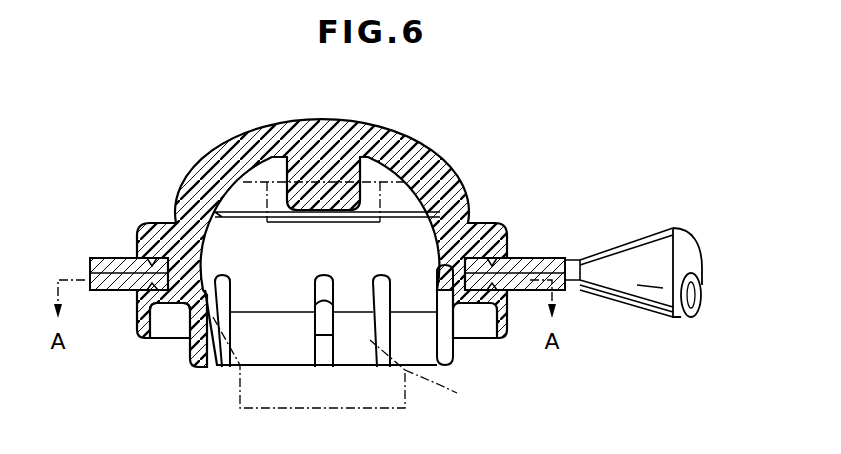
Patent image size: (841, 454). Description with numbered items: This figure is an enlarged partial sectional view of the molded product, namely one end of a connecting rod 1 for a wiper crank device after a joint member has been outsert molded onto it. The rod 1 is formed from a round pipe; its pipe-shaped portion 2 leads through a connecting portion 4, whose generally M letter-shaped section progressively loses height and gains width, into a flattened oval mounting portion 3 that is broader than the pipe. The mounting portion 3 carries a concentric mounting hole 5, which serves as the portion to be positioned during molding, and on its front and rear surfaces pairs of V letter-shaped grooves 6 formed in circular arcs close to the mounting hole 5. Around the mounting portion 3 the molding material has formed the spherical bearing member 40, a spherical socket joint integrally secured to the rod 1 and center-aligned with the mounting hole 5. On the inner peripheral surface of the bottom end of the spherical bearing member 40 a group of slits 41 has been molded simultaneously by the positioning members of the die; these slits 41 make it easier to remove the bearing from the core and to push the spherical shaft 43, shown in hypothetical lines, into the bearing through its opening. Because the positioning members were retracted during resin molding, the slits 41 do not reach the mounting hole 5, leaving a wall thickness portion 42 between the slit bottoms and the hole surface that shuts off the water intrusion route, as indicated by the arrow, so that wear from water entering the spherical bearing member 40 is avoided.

The rod 1 is at (681, 229).
The pipe-shaped portion 2 is at (693, 320).
The mounting portion 3 is at (536, 258).
The connecting portion 4 is at (615, 258).
The mounting hole 5 is at (178, 292).
The V letter-shaped grooves 6 is at (150, 258).
The spherical bearing member 40 is at (447, 162).
The slits 41 is at (233, 355).
The wall thickness portion 42 is at (447, 267).
The spherical shaft 43 is at (457, 395).